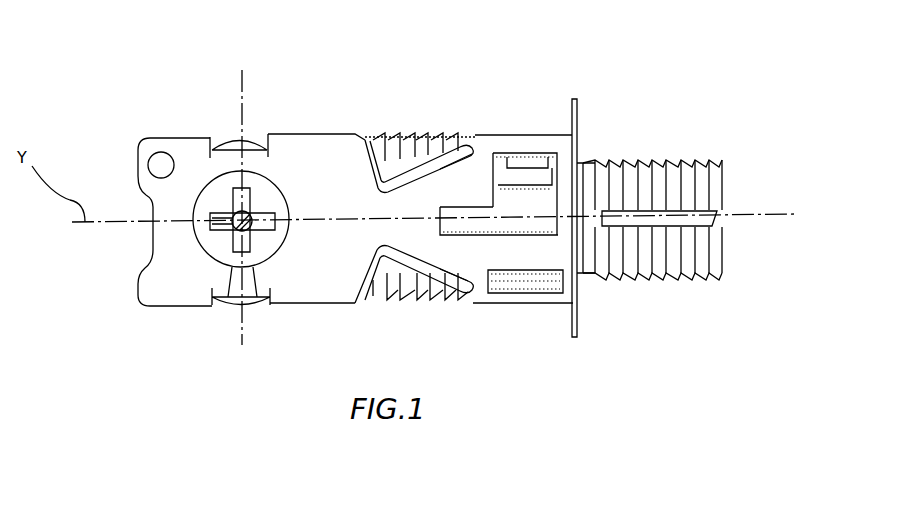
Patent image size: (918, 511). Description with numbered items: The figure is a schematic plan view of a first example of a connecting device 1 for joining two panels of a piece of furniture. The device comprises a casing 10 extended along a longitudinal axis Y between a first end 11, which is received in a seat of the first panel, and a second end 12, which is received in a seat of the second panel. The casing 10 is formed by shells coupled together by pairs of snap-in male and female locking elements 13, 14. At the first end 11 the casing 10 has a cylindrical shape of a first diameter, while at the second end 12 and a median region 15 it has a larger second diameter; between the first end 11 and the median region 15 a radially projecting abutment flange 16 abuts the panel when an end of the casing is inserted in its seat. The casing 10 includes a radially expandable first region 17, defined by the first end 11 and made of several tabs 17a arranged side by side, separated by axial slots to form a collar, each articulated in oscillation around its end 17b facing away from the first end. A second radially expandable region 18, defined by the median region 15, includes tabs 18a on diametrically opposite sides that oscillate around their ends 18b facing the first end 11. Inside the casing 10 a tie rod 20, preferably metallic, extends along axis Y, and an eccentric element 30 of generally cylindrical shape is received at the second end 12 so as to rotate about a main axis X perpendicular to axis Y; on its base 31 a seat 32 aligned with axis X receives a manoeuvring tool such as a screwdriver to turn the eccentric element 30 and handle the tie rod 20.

The connecting device 1 is at (546, 74).
The casing 10 is at (300, 140).
The first end 11 is at (652, 205).
The second end 12 is at (163, 312).
The male locking element 13 is at (517, 167).
The female locking element 14 is at (502, 167).
The median region 15 is at (356, 302).
The abutment flange 16 is at (572, 102).
The first region 17 is at (618, 274).
The tabs 17a is at (630, 164).
The end of tabs 17b is at (588, 163).
The second region 18 is at (392, 302).
The tabs 18a is at (395, 134).
The end of tabs 18b is at (474, 136).
The tie rod 20 is at (670, 210).
The eccentric element 30 is at (228, 136).
The base 31 is at (227, 252).
The seat for manoeuvring tool 32 is at (245, 248).